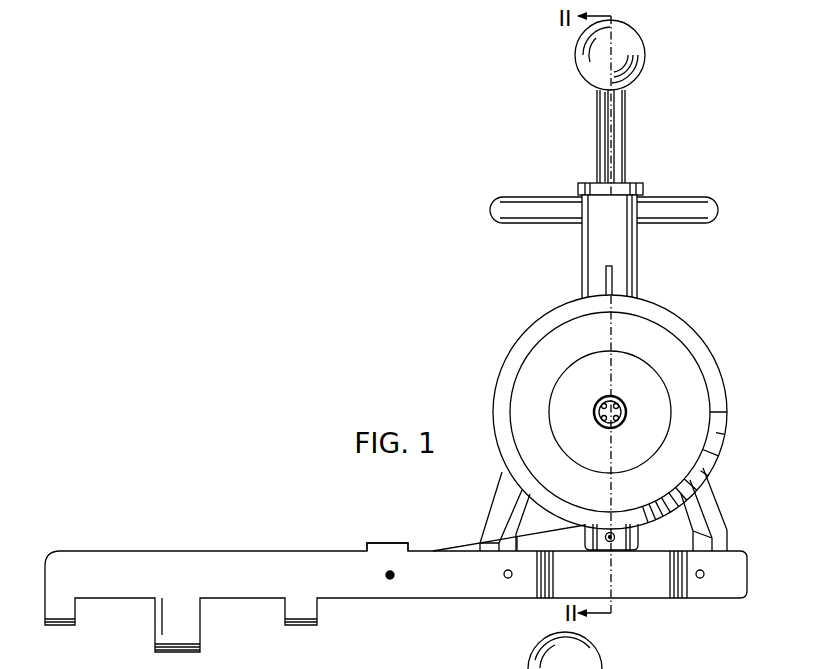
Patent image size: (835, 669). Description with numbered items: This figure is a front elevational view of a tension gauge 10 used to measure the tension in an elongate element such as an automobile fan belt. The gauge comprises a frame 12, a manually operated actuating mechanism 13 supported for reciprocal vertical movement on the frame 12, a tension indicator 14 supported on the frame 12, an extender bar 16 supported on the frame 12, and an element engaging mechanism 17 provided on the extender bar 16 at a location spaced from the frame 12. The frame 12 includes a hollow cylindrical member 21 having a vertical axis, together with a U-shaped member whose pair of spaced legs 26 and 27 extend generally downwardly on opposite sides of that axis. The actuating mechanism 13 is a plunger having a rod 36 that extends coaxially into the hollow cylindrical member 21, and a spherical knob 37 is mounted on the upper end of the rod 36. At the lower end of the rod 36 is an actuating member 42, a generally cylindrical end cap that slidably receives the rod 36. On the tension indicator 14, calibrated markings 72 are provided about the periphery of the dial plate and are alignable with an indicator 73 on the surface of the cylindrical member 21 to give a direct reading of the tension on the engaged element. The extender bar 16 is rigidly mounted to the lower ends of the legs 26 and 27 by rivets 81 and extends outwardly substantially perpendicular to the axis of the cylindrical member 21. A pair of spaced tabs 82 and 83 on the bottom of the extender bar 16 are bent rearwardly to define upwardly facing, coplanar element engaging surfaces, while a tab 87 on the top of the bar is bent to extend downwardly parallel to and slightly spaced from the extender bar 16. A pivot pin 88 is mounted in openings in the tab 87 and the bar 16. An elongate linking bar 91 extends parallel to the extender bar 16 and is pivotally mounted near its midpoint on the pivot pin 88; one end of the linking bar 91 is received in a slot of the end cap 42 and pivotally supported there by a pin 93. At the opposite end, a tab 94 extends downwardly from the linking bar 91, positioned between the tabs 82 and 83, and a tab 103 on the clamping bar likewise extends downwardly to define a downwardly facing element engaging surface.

The tension gauge 10 is at (511, 159).
The frame 12 is at (639, 280).
The manually operated actuating mechanism 13 is at (627, 132).
The tension indicator 14 is at (714, 351).
The extender bar 16 is at (440, 573).
The element engaging mechanism 17 is at (396, 536).
The hollow cylindrical member 21 is at (598, 236).
The leg 26 is at (501, 510).
The leg 27 is at (716, 521).
The rod 36 is at (604, 150).
The spherical knob 37 is at (627, 47).
The actuating member 42 is at (637, 528).
The calibrated markings 72 is at (712, 460).
The indicator 73 is at (605, 284).
The rivets 81 is at (506, 578).
The tab 82 is at (300, 627).
The tab 83 is at (60, 626).
The tab 87 is at (392, 542).
The pivot pin 88 is at (388, 580).
The linking bar 91 is at (543, 535).
The pin 93 is at (612, 541).
The tab 94 is at (192, 627).
The tab 103 is at (160, 628).